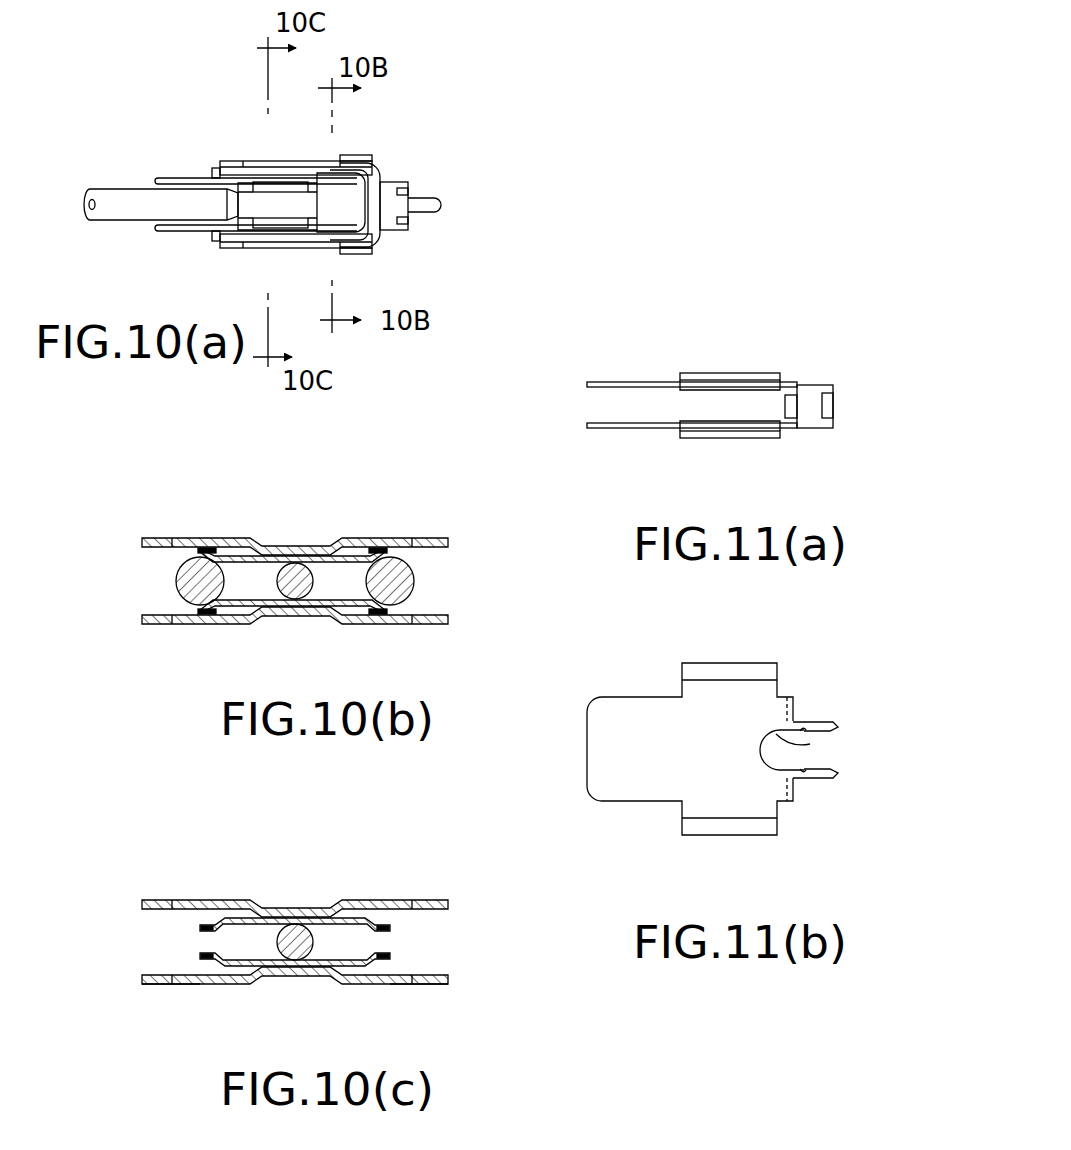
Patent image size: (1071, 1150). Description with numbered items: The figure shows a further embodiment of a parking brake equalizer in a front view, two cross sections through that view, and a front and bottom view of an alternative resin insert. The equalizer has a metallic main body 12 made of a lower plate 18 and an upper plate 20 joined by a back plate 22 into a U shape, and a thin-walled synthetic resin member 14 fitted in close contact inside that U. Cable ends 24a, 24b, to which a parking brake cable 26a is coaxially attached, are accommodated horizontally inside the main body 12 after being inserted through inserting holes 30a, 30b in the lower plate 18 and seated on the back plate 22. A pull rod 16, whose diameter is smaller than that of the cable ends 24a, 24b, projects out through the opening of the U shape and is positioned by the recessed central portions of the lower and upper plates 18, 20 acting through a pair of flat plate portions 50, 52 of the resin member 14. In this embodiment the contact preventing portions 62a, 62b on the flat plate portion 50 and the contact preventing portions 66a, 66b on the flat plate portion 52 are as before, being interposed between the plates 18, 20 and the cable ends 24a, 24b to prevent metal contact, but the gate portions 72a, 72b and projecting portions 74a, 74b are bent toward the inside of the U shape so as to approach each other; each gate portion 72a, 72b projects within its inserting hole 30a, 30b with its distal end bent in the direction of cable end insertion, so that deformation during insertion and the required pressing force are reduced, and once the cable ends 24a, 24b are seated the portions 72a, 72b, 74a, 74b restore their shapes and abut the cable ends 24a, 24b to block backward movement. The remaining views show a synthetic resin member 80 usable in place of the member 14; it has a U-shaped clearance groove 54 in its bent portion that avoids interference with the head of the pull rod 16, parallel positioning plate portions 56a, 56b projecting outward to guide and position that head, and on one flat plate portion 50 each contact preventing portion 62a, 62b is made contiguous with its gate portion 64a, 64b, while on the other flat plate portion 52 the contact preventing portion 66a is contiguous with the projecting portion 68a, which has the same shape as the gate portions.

In FIG. 10A, the main body 12 is at (384, 165).
In FIG. 10A, the synthetic resin member 14 is at (180, 243).
In FIG. 10A, the pull rod 16 is at (115, 206).
In FIG. 10B, the pull rod 16 is at (295, 570).
In FIG. 10C, the pull rod 16 is at (300, 930).
In FIG. 10A, the lower plate 18 is at (293, 249).
In FIG. 10B, the lower plate 18 is at (170, 624).
In FIG. 10C, the lower plate 18 is at (153, 985).
In FIG. 10A, the upper plate 20 is at (297, 161).
In FIG. 10B, the upper plate 20 is at (160, 539).
In FIG. 10C, the upper plate 20 is at (160, 901).
In FIG. 10A, the back plate 22 is at (378, 220).
In FIG. 10A, the cable end 24a is at (342, 220).
In FIG. 10B, the cable end 24a is at (405, 584).
In FIG. 10B, the cable end 24b is at (190, 571).
In FIG. 10A, the parking brake cable 26a is at (428, 197).
In FIG. 10C, the inserting hole 30a is at (405, 985).
In FIG. 10C, the inserting hole 30b is at (187, 985).
In FIG. 10B, the flat plate portion 50 is at (280, 606).
In FIG. 10C, the flat plate portion 50 is at (300, 975).
In FIG. 11A, the flat plate portion 50 is at (650, 429).
In FIG. 11B, the flat plate portion 50 is at (628, 781).
In FIG. 10B, the flat plate portion 52 is at (278, 556).
In FIG. 10C, the flat plate portion 52 is at (277, 918).
In FIG. 11A, the flat plate portion 52 is at (642, 381).
In FIG. 11B, the clearance groove 54 is at (806, 741).
In FIG. 11A, the positioning plate portion 56a is at (813, 420).
In FIG. 11B, the positioning plate portion 56a is at (812, 720).
In FIG. 11B, the positioning plate portion 56b is at (812, 780).
In FIG. 10B, the contact preventing portion 62a is at (380, 614).
In FIG. 11A, the contact preventing portion 62a is at (765, 438).
In FIG. 11B, the contact preventing portion 62a is at (760, 670).
In FIG. 10B, the contact preventing portion 62b is at (213, 614).
In FIG. 11B, the contact preventing portion 62b is at (768, 826).
In FIG. 11A, the gate portion 64a is at (702, 438).
In FIG. 11B, the gate portion 64a is at (702, 670).
In FIG. 11B, the gate portion 64b is at (700, 826).
In FIG. 10B, the contact preventing portion 66a is at (380, 548).
In FIG. 11A, the contact preventing portion 66a is at (768, 373).
In FIG. 10B, the contact preventing portion 66b is at (210, 548).
In FIG. 11A, the projecting portion 68a is at (702, 373).
In FIG. 10A, the gate portion 72a is at (262, 228).
In FIG. 10C, the gate portion 72a is at (383, 960).
In FIG. 10C, the gate portion 72b is at (213, 960).
In FIG. 10A, the projecting portion 74a is at (273, 182).
In FIG. 10C, the projecting portion 74a is at (383, 925).
In FIG. 10C, the projecting portion 74b is at (210, 925).
In FIG. 11A, the synthetic resin member 80 is at (772, 330).
In FIG. 11B, the synthetic resin member 80 is at (808, 650).